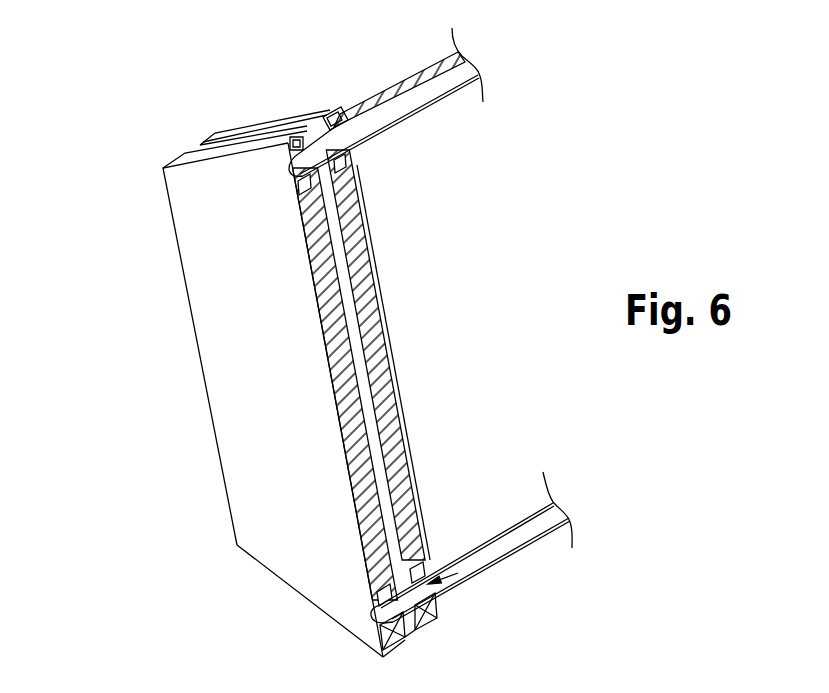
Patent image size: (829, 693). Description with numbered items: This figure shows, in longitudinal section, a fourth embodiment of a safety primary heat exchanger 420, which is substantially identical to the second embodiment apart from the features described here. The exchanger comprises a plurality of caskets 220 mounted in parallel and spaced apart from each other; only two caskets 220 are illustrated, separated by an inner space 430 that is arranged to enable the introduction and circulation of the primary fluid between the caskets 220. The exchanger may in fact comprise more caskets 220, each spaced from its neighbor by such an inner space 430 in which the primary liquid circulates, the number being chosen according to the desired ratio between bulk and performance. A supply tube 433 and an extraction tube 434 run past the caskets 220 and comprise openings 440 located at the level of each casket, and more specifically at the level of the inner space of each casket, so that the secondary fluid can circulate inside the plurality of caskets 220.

The safety primary heat exchanger 420 is at (90, 192).
The casket 220 is at (242, 353).
The inner space 430 is at (358, 403).
The supply tube 433 is at (521, 548).
The extraction tube 434 is at (430, 100).
The opening 440 is at (458, 573).